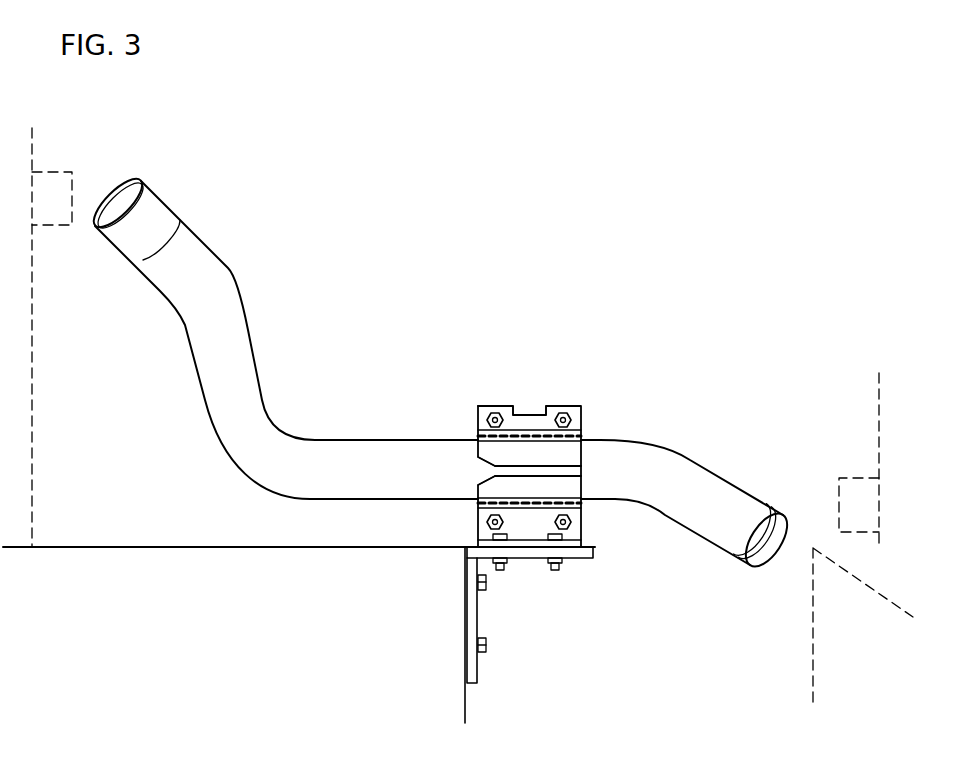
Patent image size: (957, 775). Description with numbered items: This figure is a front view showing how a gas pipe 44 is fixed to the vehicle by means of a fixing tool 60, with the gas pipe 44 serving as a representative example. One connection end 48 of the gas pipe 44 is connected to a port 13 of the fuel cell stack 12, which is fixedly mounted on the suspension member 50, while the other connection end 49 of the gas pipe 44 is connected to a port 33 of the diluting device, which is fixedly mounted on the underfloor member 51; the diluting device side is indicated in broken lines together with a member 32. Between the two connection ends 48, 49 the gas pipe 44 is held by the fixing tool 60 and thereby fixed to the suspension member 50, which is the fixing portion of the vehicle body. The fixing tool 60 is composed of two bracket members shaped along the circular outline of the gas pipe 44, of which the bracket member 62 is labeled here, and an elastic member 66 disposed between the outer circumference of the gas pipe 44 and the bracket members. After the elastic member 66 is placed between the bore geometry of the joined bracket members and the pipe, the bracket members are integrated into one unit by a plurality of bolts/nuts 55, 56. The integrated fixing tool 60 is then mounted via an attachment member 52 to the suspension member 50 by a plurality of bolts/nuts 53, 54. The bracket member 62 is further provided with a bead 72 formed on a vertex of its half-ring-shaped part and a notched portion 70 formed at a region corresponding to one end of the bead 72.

The fuel cell stack 12 is at (22, 392).
The port 13 is at (58, 182).
The engine-side member 32 is at (893, 405).
The port 33 is at (862, 493).
The gas pipe 44 is at (235, 320).
The connection end 48 is at (153, 208).
The connection end 49 is at (752, 505).
The suspension member 50 is at (457, 703).
The underfloor member 51 is at (828, 638).
The attachment member 52 is at (477, 675).
The bolts/nuts 53 is at (486, 585).
The bolts/nuts 54 is at (491, 536).
The bolts/nuts 55 is at (478, 522).
The bolts/nuts 56 is at (478, 418).
The fixing tool 60 is at (589, 378).
The bracket member 62 is at (530, 420).
The elastic member 66 is at (582, 438).
The notched portion 70 is at (469, 477).
The bead 72 is at (582, 468).